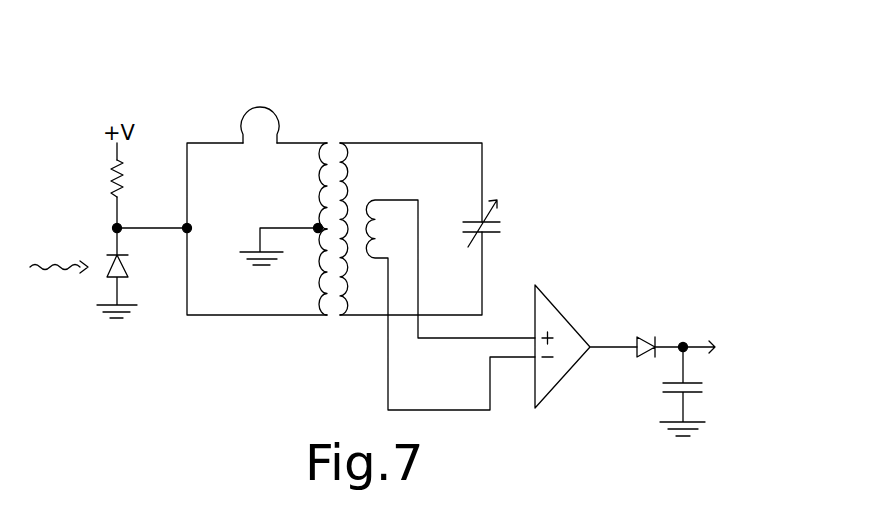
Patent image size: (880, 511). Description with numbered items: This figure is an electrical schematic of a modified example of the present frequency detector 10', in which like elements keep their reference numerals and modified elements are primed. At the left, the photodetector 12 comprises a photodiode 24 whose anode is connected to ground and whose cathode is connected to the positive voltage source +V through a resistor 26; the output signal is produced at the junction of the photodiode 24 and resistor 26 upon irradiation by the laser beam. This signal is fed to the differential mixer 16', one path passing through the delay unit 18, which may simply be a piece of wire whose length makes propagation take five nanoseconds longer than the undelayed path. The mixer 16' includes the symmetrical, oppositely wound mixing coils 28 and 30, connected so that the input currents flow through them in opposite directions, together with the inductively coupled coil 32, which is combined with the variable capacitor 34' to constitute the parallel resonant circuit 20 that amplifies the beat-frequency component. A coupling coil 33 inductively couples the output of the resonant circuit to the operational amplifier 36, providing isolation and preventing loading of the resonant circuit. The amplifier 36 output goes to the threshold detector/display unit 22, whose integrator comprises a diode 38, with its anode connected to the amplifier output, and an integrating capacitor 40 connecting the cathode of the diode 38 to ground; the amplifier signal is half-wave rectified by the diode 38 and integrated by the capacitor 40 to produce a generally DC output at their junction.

The frequency detector 10' is at (443, 220).
The photodetector 12 is at (88, 230).
The differential mixer 16' is at (300, 197).
The delay unit 18 is at (265, 108).
The resonant amplifier 20 is at (467, 124).
The threshold detector/display unit 22 is at (699, 332).
The photodiode 24 is at (107, 265).
The resistor 26 is at (117, 160).
The mixing coil 28 is at (322, 174).
The mixing coil 30 is at (322, 262).
The inductively coupled coil 32 is at (352, 160).
The coupling coil 33 is at (370, 193).
The variable capacitor 34' is at (504, 205).
The operational amplifier 36 is at (538, 288).
The diode 38 is at (638, 337).
The integrating capacitor 40 is at (693, 393).